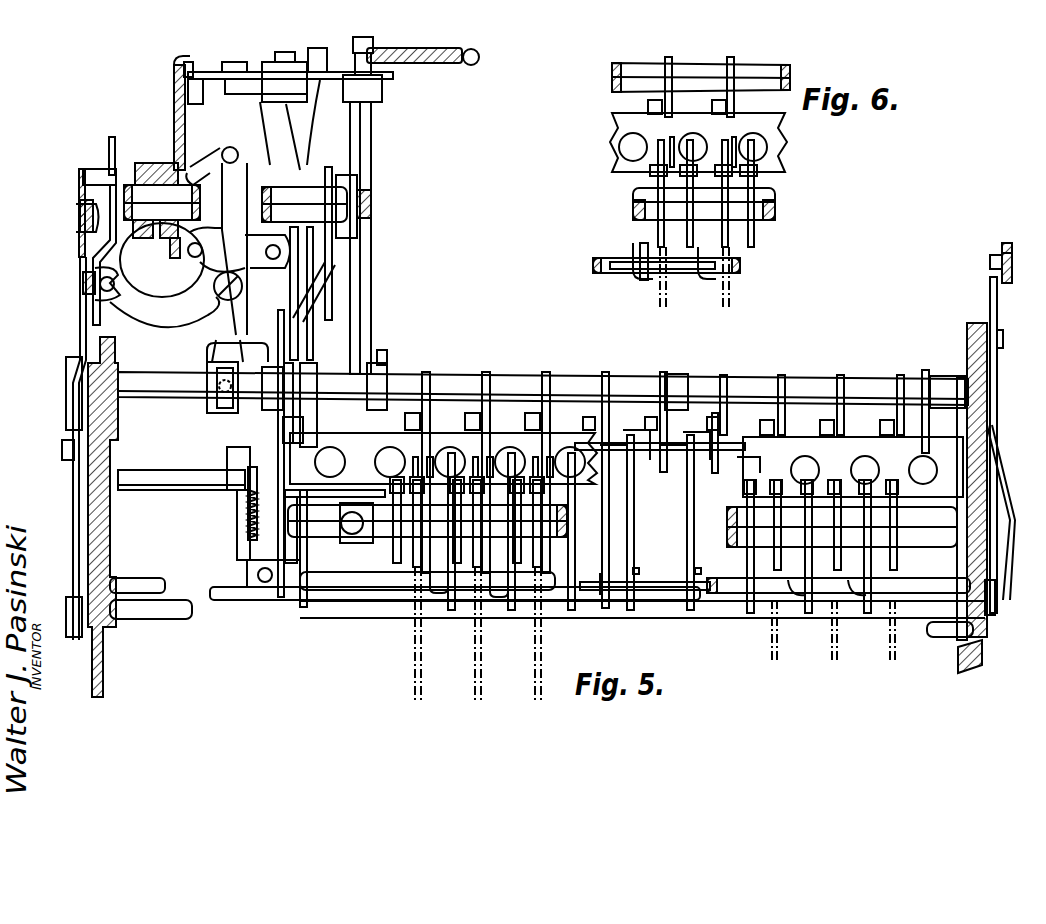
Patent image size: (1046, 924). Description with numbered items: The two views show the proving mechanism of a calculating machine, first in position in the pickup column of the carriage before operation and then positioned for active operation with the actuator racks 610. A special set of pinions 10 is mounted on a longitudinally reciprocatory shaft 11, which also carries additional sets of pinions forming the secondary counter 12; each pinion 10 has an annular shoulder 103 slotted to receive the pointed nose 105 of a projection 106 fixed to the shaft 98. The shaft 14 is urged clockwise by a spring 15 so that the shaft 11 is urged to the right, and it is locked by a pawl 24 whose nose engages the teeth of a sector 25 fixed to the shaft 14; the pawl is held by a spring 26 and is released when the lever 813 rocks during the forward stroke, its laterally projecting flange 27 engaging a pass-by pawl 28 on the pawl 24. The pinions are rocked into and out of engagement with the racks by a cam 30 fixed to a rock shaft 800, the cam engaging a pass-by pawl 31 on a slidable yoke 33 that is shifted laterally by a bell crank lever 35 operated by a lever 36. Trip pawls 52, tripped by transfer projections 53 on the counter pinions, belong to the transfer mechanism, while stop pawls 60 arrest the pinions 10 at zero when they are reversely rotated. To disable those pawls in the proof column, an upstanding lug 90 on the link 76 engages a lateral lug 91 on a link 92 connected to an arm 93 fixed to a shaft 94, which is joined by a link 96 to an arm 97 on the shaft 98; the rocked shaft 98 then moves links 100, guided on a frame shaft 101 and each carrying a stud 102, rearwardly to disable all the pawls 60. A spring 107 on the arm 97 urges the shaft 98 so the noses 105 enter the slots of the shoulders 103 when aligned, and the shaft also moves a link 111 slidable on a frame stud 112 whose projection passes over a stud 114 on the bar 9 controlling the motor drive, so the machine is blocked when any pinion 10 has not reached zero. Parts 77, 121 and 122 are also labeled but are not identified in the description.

In FIG. 5, the bar 9 is at (1012, 254).
In FIG. 5, the pinions 10 is at (455, 541).
In FIG. 6, the pinions 10 is at (657, 208).
In FIG. 5, the longitudinally reciprocatory shaft 11 is at (324, 505).
In FIG. 5, the secondary counter 12 is at (472, 560).
In FIG. 6, the secondary counter 12 is at (665, 230).
In FIG. 5, the shaft 14 is at (371, 128).
In FIG. 5, the spring 15 is at (464, 64).
In FIG. 5, the pawl 24 is at (338, 76).
In FIG. 5, the sector 25 is at (376, 84).
In FIG. 5, the spring 26 is at (327, 60).
In FIG. 5, the laterally projecting flange 27 is at (192, 66).
In FIG. 5, the pass-by pawl 28 is at (203, 98).
In FIG. 5, the cam 30 is at (296, 312).
In FIG. 5, the pass-by pawl 31 is at (283, 432).
In FIG. 5, the slidable yoke 33 is at (262, 358).
In FIG. 5, the bell crank lever 35 is at (216, 315).
In FIG. 5, the lever 36 is at (83, 283).
In FIG. 5, the trip pawls 52 is at (524, 454).
In FIG. 6, the trip pawls 52 is at (698, 142).
In FIG. 5, the transfer projections 53 is at (466, 454).
In FIG. 5, the stop pawls 60 is at (568, 458).
In FIG. 6, the stop pawls 60 is at (723, 137).
In FIG. 5, the link 76 is at (100, 252).
In FIG. 5, the pawl 77 is at (104, 300).
In FIG. 5, the upstanding lug 90 is at (115, 174).
In FIG. 5, the lateral lug 91 is at (106, 173).
In FIG. 5, the link 92 is at (72, 401).
In FIG. 5, the arm 93 is at (74, 480).
In FIG. 5, the shaft 94 is at (203, 486).
In FIG. 5, the link 96 is at (248, 534).
In FIG. 5, the arm 97 is at (250, 568).
In FIG. 5, the shaft 98 is at (345, 600).
In FIG. 6, the shaft 98 is at (624, 270).
In FIG. 5, the links 100 is at (826, 527).
In FIG. 5, the frame shaft 101 is at (611, 576).
In FIG. 5, the stud 102 is at (660, 572).
In FIG. 5, the annular shoulder 103 is at (747, 545).
In FIG. 6, the annular shoulder 103 is at (650, 190).
In FIG. 5, the pointed nose 105 is at (517, 545).
In FIG. 6, the pointed nose 105 is at (648, 285).
In FIG. 5, the projection 106 is at (493, 597).
In FIG. 6, the projection 106 is at (634, 283).
In FIG. 5, the spring 107 is at (248, 517).
In FIG. 5, the link 111 is at (997, 302).
In FIG. 5, the frame stud 112 is at (1018, 349).
In FIG. 5, the stud 114 is at (990, 266).
In FIG. 5, the block 121 is at (78, 222).
In FIG. 5, the bracket 122 is at (80, 206).
In FIG. 5, the actuator racks 610 is at (430, 642).
In FIG. 6, the actuator racks 610 is at (716, 290).
In FIG. 5, the rock shaft 800 is at (168, 240).
In FIG. 5, the lever 813 is at (174, 103).